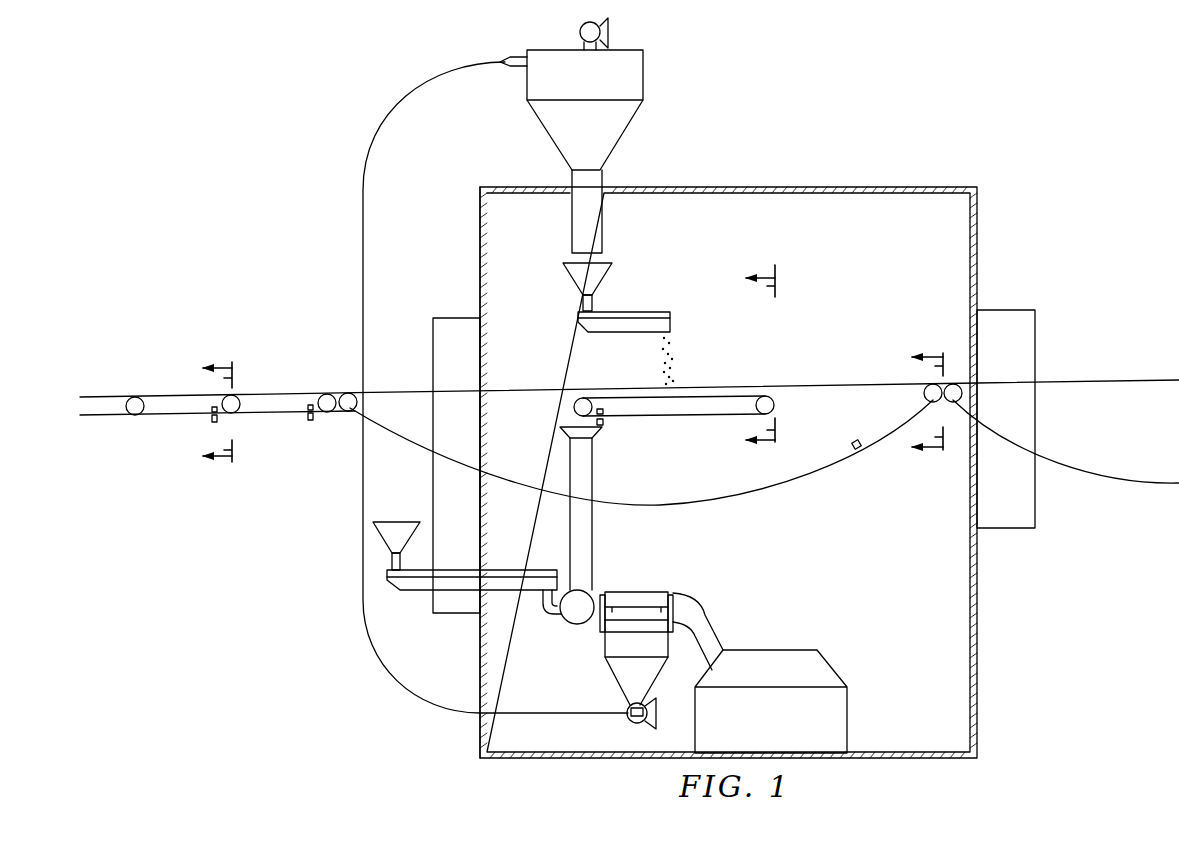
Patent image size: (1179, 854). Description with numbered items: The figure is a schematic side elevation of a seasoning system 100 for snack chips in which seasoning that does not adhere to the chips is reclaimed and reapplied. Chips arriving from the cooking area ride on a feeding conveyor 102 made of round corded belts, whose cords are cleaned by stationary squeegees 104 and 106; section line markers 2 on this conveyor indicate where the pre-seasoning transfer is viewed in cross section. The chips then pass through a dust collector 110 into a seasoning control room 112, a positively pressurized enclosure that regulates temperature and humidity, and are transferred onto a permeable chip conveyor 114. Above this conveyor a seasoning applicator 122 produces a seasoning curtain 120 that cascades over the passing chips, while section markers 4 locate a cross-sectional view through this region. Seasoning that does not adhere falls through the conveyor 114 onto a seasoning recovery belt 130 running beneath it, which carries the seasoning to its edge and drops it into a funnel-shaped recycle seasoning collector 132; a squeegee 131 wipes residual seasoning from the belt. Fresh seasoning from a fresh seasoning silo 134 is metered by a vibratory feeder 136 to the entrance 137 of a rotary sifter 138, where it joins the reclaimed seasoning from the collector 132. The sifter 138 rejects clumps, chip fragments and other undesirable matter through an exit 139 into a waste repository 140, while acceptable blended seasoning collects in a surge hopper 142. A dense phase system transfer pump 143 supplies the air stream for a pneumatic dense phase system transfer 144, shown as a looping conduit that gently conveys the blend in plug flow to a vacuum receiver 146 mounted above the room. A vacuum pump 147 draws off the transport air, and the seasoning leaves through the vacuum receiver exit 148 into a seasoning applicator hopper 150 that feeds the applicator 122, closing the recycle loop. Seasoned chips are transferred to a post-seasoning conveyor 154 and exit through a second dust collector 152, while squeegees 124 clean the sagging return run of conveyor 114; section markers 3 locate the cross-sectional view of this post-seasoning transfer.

The seasoning system 100 is at (270, 110).
The feeding conveyor 102 is at (284, 393).
The squeegee 104 is at (213, 423).
The squeegee 106 is at (311, 421).
The dust collector 110 is at (452, 318).
The seasoning control room 112 is at (480, 197).
The chip conveyor 114 is at (537, 389).
The seasoning curtain 120 is at (676, 355).
The seasoning applicator 122 is at (672, 319).
The squeegees 124 is at (861, 452).
The seasoning recovery belt 130 is at (694, 416).
The squeegee 131 is at (604, 425).
The recycle seasoning collector 132 is at (594, 522).
The fresh seasoning silo 134 is at (398, 522).
The vibratory feeder 136 is at (531, 570).
The entrance of rotary sifter 137 is at (569, 625).
The rotary sifter 138 is at (651, 592).
The exit 139 is at (706, 614).
The waste repository 140 is at (847, 716).
The surge hopper 142 is at (619, 680).
The dense phase system transfer pump 143 is at (629, 726).
The pneumatic dense phase system transfer 144 is at (540, 713).
The vacuum receiver 146 is at (644, 72).
The vacuum pump 147 is at (580, 34).
The vacuum receiver exit 148 is at (626, 135).
The seasoning applicator hopper 150 is at (575, 283).
The dust collector 152 is at (1006, 310).
The post-seasoning conveyor 154 is at (1092, 381).
The section line 2 is at (220, 416).
The section line 3 is at (930, 405).
The section line 4 is at (763, 360).